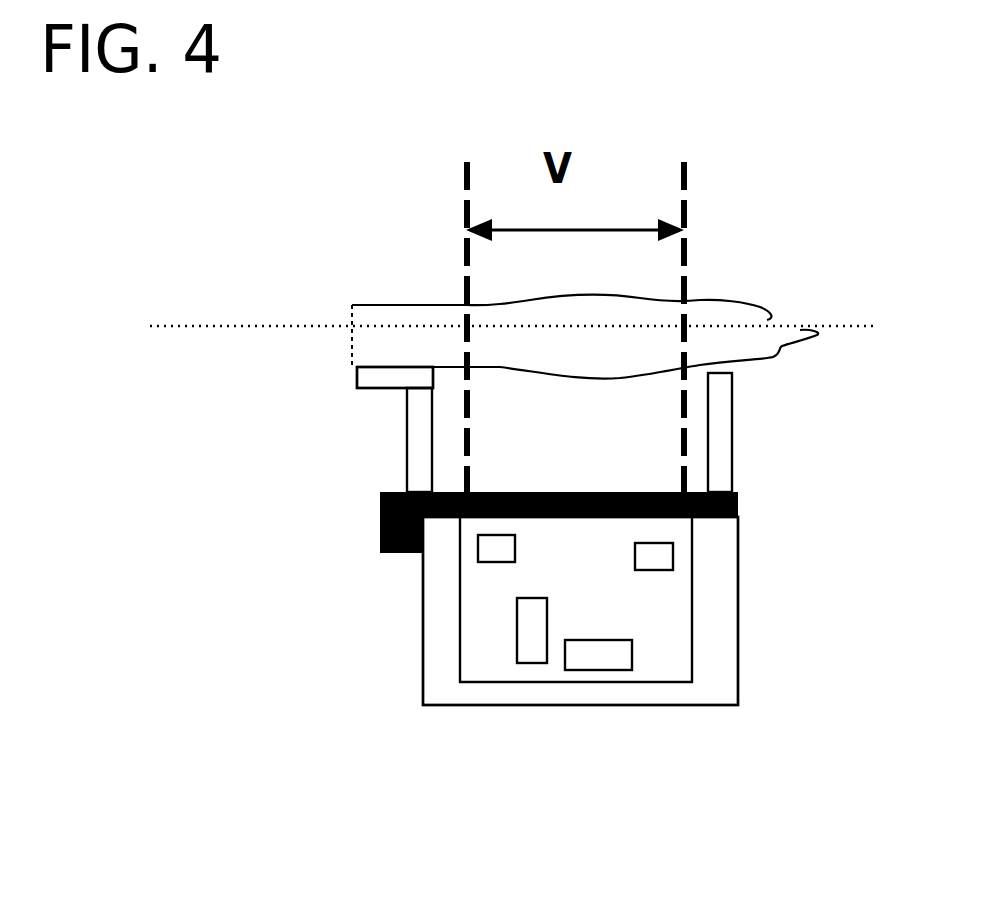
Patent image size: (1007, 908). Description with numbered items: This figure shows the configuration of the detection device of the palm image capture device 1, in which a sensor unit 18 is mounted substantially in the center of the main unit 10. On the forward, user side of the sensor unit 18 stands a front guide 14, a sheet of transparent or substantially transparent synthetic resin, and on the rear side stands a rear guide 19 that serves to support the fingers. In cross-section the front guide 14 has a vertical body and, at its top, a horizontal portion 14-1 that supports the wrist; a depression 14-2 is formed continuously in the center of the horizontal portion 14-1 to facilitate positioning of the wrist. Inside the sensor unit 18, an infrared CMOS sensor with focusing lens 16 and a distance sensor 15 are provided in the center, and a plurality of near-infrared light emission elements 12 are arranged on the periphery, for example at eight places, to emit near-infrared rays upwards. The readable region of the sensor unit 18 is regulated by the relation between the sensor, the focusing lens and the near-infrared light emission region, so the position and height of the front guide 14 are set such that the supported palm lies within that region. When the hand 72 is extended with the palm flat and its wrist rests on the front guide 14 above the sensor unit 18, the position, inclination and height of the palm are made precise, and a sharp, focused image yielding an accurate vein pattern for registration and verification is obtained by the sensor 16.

The palm image capture device 1 is at (442, 680).
The main unit 10 is at (432, 578).
The near-infrared light emission elements 12 is at (497, 550).
The front guide 14 is at (425, 430).
The horizontal portion 14-1 is at (377, 382).
The depression 14-2 is at (269, 402).
The distance sensor 15 is at (535, 650).
The infrared sensor and focusing lens 16 is at (615, 655).
The sensor unit 18 is at (667, 668).
The rear guide 19 is at (732, 420).
The hand 72 is at (407, 310).